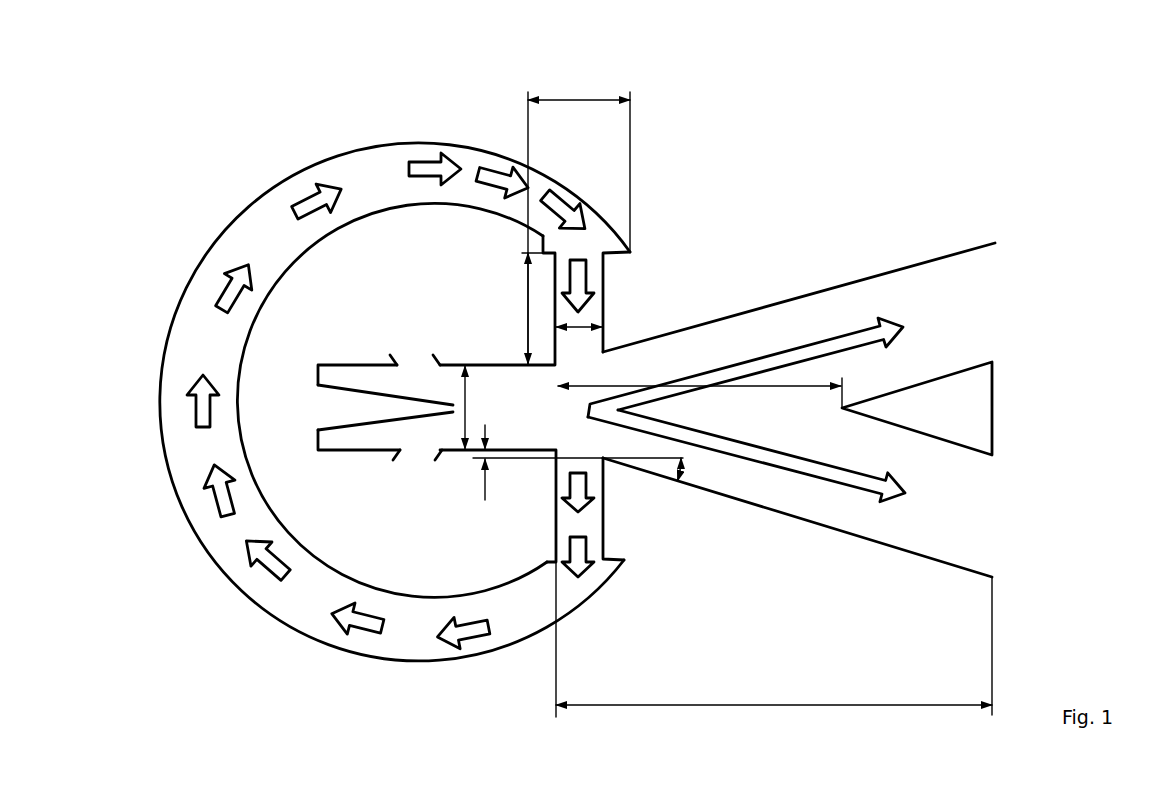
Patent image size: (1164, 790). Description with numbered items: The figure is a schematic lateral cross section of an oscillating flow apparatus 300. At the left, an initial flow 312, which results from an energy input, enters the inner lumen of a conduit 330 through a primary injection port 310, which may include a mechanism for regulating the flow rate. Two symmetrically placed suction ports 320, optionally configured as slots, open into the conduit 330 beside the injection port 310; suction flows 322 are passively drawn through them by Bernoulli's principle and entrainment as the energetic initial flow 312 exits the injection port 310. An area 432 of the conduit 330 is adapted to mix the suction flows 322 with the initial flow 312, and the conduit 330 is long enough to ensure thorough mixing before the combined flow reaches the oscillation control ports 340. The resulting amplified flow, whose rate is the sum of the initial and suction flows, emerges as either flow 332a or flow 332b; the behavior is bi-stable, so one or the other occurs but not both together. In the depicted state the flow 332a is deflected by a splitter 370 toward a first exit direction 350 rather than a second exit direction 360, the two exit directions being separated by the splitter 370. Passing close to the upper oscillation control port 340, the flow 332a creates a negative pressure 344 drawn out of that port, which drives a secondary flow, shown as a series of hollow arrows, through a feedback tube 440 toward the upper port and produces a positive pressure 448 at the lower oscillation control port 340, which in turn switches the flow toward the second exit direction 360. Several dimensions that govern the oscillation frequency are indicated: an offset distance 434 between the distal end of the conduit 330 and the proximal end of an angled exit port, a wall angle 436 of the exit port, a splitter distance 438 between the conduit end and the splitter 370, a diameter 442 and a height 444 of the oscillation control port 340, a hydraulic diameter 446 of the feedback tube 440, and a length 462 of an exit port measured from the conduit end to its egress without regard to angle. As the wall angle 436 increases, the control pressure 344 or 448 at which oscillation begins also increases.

The oscillating flow apparatus 300 is at (315, 127).
The primary injection port 310 is at (362, 432).
The initial flow 312 is at (352, 415).
The suction port 320 is at (420, 358).
The suction flow 322 is at (428, 380).
The conduit 330 is at (492, 381).
The amplified flow toward first exit direction 332a is at (873, 335).
The amplified flow toward second exit direction 332b is at (891, 493).
The oscillation control port 340 is at (591, 310).
The negative pressure 344 is at (578, 275).
The first exit direction 350 is at (976, 278).
The second exit direction 360 is at (979, 541).
The splitter 370 is at (968, 405).
The mixing area 432 is at (469, 395).
The offset distance 434 is at (470, 458).
The wall angle 436 is at (684, 467).
The splitter distance 438 is at (597, 380).
The feedback tube 440 is at (300, 597).
The diameter of oscillation port 442 is at (578, 335).
The height of oscillation port 444 is at (521, 282).
The hydraulic diameter of feedback tube 446 is at (567, 94).
The positive pressure 448 is at (589, 487).
The length of exit port 462 is at (752, 704).